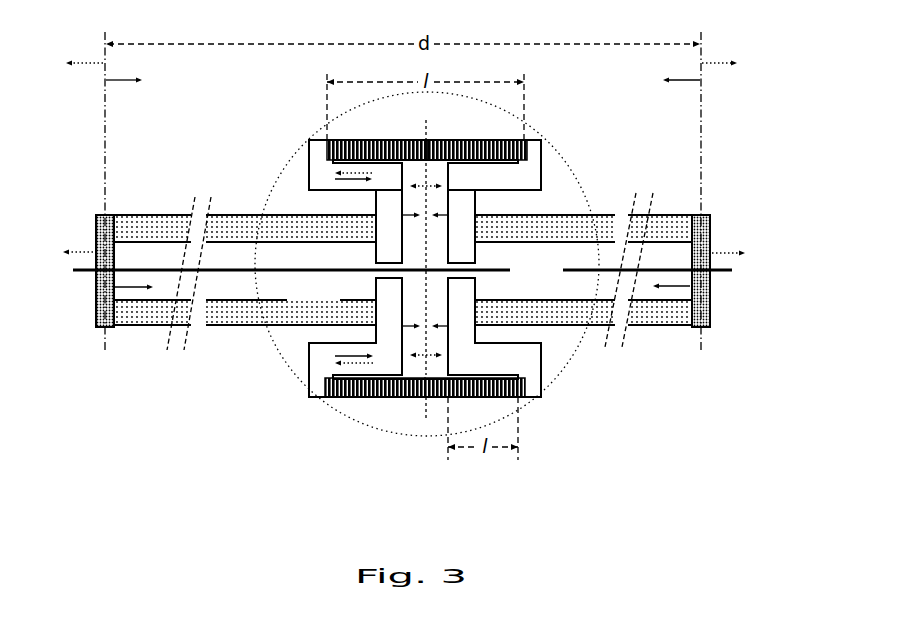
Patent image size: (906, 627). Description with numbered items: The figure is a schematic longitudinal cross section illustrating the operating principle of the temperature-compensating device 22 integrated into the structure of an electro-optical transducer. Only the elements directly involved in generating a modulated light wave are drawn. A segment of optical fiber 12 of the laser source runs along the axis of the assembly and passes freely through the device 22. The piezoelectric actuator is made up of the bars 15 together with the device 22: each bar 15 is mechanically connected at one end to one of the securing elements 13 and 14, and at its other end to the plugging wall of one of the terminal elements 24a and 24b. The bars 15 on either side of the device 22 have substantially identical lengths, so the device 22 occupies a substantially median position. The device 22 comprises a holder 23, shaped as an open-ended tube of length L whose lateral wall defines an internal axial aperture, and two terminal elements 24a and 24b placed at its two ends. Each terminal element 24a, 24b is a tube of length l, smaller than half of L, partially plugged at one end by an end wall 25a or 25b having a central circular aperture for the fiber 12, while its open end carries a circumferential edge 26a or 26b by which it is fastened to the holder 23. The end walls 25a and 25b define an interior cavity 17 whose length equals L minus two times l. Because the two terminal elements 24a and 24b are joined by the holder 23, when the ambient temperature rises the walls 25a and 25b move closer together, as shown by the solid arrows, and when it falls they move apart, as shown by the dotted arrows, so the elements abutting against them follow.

The segment of optical fiber 12 is at (402, 207).
The securing element 13 is at (67, 307).
The securing element 14 is at (738, 227).
The bars 15 is at (403, 278).
The interior cavity 17 is at (425, 271).
The device for compensating for temperature 22 is at (427, 305).
The holder 23 is at (403, 391).
The terminal element 24a is at (514, 113).
The terminal element 24b is at (338, 123).
The end wall 25a is at (501, 238).
The end wall 25b is at (347, 251).
The circumferential edge 26a is at (536, 418).
The circumferential edge 26b is at (316, 410).